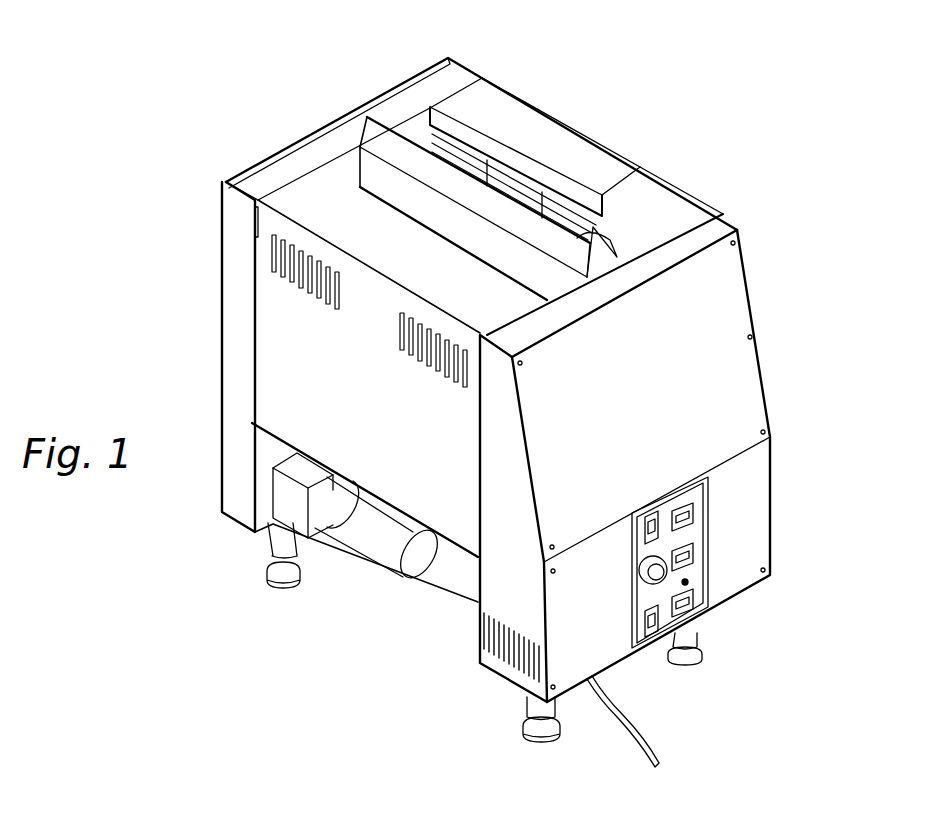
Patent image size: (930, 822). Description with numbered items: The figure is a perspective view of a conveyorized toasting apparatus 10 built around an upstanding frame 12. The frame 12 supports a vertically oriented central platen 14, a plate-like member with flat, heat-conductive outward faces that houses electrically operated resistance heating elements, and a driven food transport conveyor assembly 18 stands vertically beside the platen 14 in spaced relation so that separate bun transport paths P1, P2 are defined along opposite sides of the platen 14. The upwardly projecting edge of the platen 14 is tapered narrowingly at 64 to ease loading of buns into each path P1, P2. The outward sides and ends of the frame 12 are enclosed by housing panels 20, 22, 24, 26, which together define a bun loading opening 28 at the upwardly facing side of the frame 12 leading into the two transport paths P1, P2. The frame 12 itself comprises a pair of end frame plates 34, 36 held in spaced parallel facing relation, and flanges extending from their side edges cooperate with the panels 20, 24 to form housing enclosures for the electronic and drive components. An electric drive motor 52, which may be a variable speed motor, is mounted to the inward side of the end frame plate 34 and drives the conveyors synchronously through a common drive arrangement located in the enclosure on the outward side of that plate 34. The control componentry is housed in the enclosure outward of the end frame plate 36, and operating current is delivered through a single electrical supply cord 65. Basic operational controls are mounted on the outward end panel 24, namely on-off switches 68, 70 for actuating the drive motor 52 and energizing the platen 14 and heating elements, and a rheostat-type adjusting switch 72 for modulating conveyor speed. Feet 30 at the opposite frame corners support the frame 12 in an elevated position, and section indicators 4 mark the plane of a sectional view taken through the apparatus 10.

The toasting apparatus 10 is at (172, 172).
The upstanding frame 12 is at (467, 582).
The central platen 14 is at (560, 283).
The food transport conveyor assembly 18 is at (477, 163).
The housing panel 20 is at (356, 112).
The housing panel 22 is at (668, 210).
The outward end panel 24 is at (720, 438).
The housing panel 26 is at (360, 421).
The bun loading opening 28 is at (363, 193).
The feet 30 is at (278, 546).
The end frame plate 34 is at (232, 350).
The end frame plate 36 is at (525, 559).
The electric drive motor 52 is at (392, 553).
The tapered edge 64 is at (600, 245).
The electrical supply cord 65 is at (640, 738).
The on-off switch 68 is at (662, 528).
The on-off switch 70 is at (680, 652).
The adjusting switch 72 is at (668, 580).
The bun transport path P1 is at (347, 163).
The bun transport path P2 is at (415, 128).
The section line 4- 4 is at (600, 170).